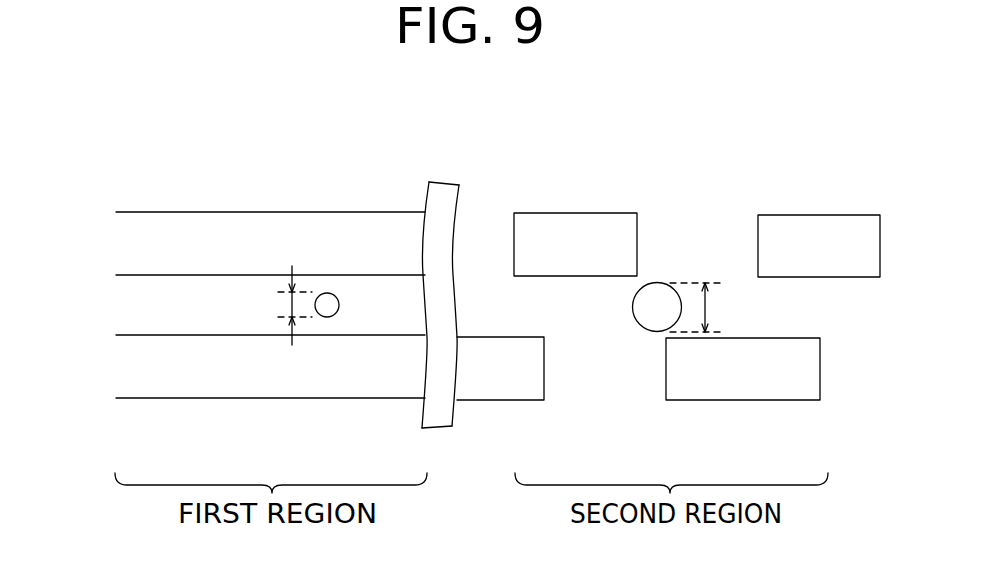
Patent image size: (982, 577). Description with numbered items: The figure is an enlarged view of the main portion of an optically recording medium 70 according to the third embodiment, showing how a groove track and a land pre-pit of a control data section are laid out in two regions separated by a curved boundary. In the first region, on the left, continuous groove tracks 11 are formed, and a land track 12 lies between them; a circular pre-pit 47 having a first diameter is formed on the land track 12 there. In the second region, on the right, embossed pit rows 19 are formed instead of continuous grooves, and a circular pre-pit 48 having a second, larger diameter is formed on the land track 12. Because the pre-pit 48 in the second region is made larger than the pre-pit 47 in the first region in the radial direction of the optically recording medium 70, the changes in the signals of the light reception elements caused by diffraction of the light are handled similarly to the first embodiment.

The groove tracks 11 is at (234, 305).
The land track 12 is at (194, 305).
The embossed pit rows 19 is at (515, 367).
The pre-pit 47 is at (334, 292).
The pre-pit 48 is at (643, 329).
The optically recording medium 70 is at (497, 164).